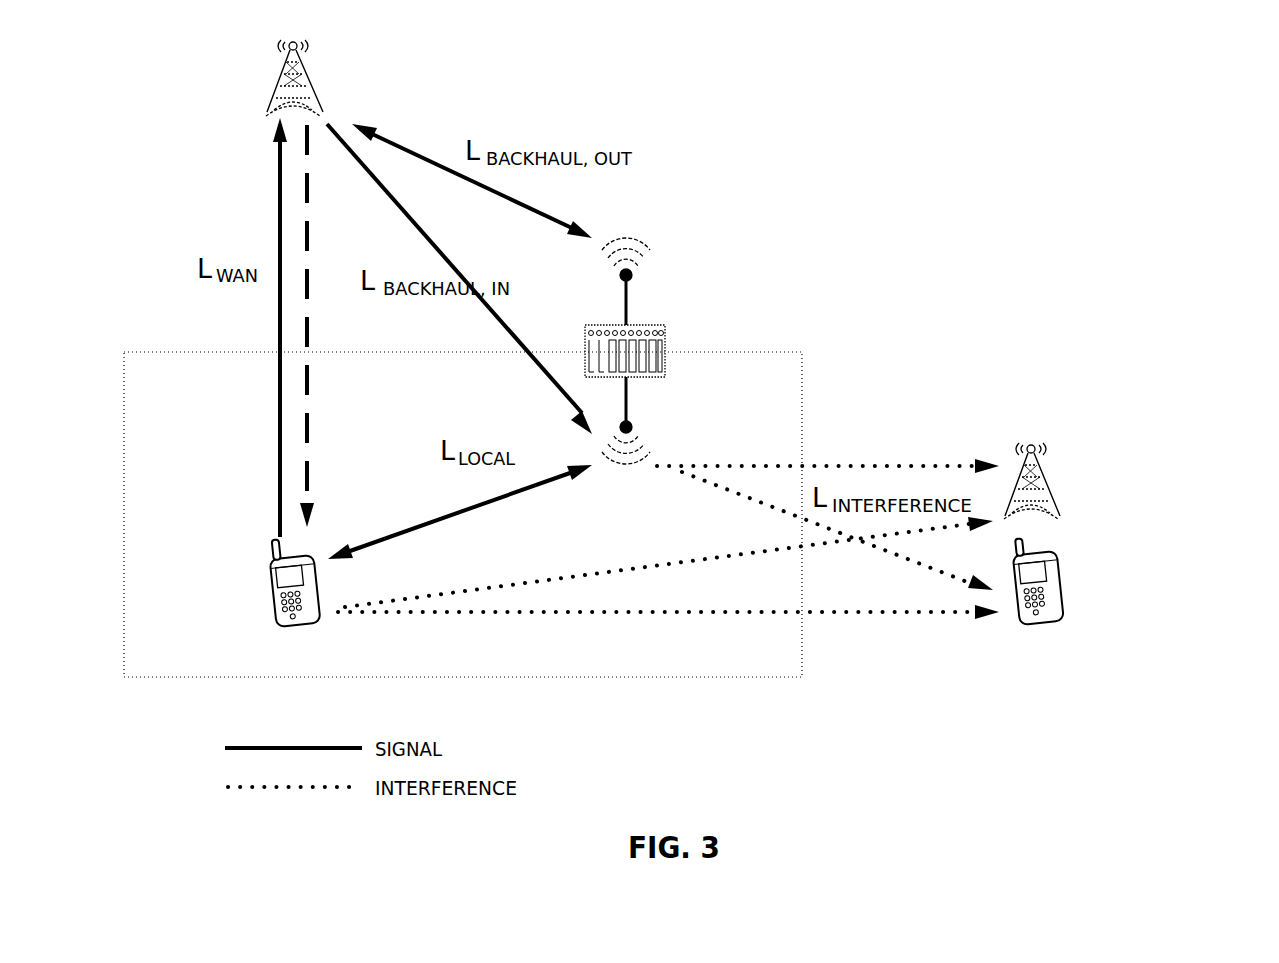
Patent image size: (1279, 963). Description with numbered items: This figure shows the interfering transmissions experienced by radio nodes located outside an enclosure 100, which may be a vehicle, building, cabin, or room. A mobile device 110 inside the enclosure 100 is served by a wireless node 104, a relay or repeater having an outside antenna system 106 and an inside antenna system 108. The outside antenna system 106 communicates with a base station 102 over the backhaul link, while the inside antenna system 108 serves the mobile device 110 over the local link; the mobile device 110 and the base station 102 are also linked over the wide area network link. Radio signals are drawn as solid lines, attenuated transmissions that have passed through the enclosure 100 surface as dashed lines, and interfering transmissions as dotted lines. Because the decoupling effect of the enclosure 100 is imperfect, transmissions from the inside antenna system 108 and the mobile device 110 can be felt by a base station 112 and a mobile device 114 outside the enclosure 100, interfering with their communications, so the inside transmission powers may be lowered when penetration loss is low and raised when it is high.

The enclosure 100 is at (463, 514).
The base station 102 is at (379, 78).
The wireless node 104 is at (720, 338).
The outside antenna system 106 is at (781, 281).
The inside antenna system 108 is at (771, 420).
The mobile device 110 is at (297, 597).
The base station 112 is at (1091, 481).
The mobile device 114 is at (1131, 580).